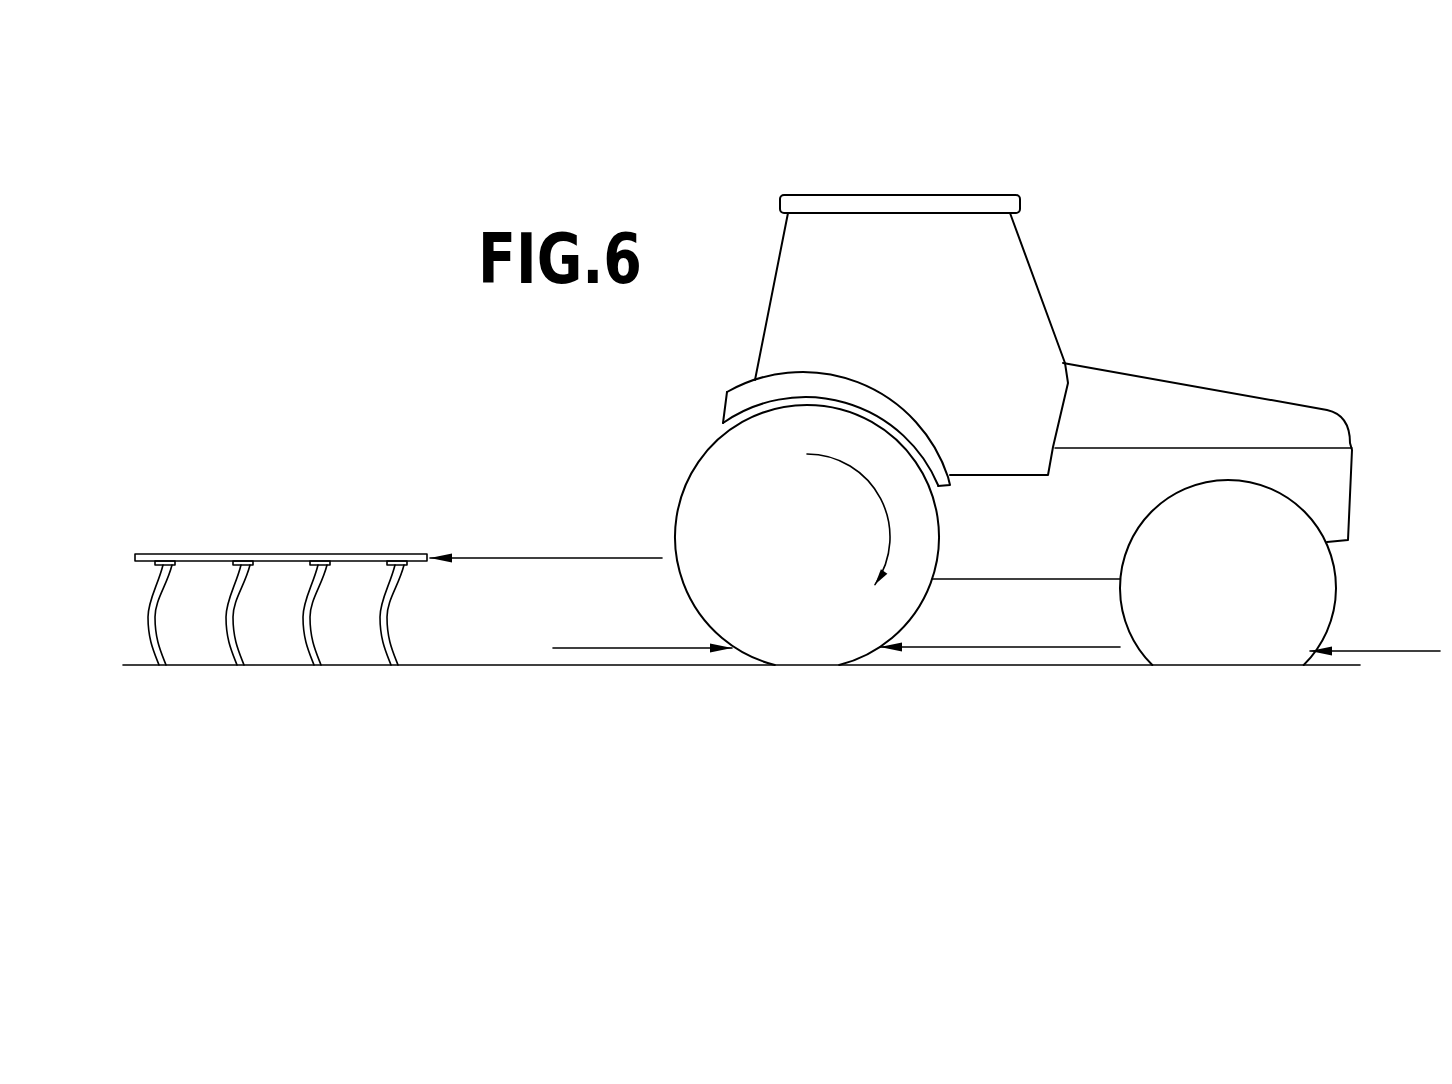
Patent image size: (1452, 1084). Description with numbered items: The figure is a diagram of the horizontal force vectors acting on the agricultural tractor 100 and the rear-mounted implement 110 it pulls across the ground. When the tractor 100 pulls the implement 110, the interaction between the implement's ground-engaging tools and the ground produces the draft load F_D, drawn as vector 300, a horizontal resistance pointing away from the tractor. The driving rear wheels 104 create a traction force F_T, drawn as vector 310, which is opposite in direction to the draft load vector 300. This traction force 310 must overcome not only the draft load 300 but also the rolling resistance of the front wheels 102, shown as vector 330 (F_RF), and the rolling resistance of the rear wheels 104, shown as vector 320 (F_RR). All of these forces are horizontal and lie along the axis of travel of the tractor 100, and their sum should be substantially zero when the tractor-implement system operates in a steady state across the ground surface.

The agricultural tractor 100 is at (1130, 303).
The front wheels 102 is at (1202, 652).
The rear wheels 104 is at (800, 648).
The rear-mounted implement 110 is at (235, 465).
The draft load vector 300 is at (458, 482).
The traction force vector 310 is at (557, 678).
The rear wheel rolling resistance vector 320 is at (966, 676).
The front wheel rolling resistance vector 330 is at (1335, 683).